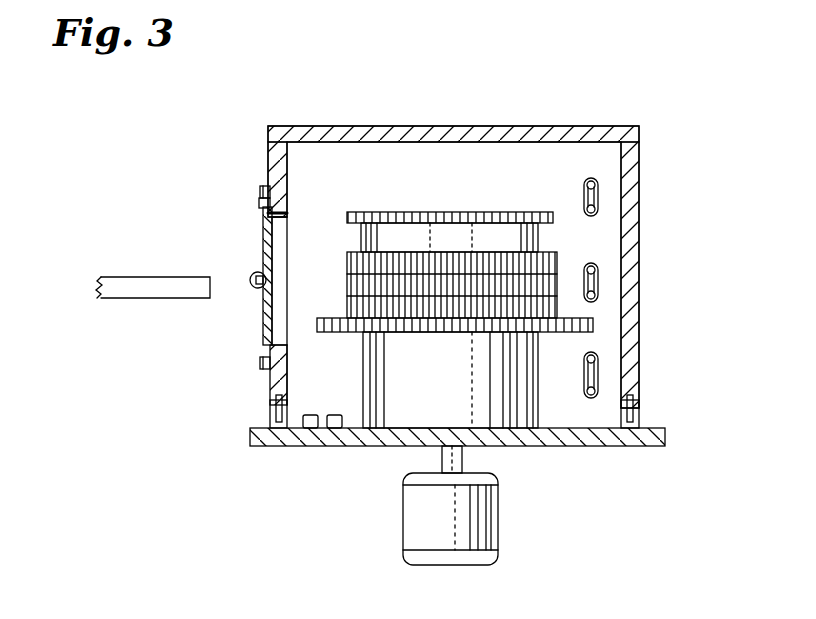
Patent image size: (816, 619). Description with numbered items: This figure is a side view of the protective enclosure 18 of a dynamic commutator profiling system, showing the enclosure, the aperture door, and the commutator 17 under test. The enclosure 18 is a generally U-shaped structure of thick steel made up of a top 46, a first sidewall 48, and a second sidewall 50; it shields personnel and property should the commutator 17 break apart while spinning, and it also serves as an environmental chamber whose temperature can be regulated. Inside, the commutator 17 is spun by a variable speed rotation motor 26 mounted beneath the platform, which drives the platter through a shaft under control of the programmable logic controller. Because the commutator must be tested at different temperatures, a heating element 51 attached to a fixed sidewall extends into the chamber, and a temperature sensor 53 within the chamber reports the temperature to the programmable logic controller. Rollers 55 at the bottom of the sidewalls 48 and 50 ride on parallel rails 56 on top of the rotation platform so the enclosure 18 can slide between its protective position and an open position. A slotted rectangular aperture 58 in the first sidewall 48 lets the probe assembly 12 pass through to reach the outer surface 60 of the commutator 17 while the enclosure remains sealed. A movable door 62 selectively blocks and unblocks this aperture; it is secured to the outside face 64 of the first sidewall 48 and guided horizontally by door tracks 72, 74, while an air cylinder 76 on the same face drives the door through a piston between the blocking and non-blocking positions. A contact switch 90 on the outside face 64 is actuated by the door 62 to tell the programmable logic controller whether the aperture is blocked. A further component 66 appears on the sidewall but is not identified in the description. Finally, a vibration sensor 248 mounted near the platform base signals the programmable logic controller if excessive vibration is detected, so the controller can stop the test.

The probe assembly 12 is at (127, 272).
The commutator 17 is at (540, 287).
The protective enclosure 18 is at (578, 112).
The variable speed rotation motor 26 is at (403, 520).
The top 46 is at (396, 126).
The first sidewall 48 is at (268, 140).
The second sidewall 50 is at (639, 205).
The heating element 51 is at (598, 196).
The temperature sensor 53 is at (334, 436).
The rollers 55 is at (270, 408).
The rails 56 is at (640, 426).
The slotted rectangular aperture 58 is at (280, 247).
The outer surface 60 is at (557, 258).
The movable door 62 is at (263, 320).
The outside face 64 is at (270, 385).
The hinge 66 is at (259, 206).
The door track 72 is at (263, 186).
The door track 74 is at (260, 364).
The air cylinder 76 is at (256, 272).
The contact switch 90 is at (287, 379).
The vibration sensor 248 is at (310, 436).